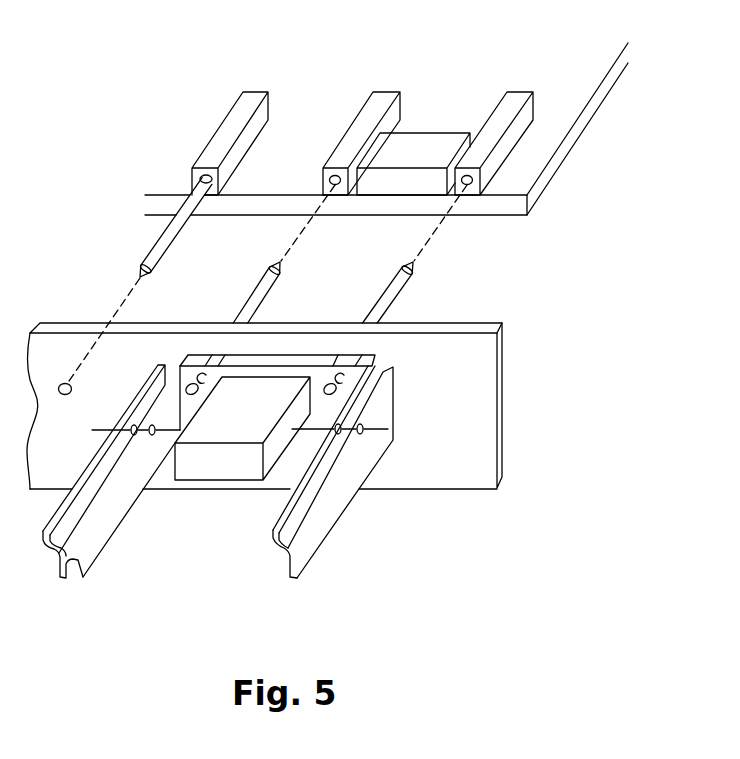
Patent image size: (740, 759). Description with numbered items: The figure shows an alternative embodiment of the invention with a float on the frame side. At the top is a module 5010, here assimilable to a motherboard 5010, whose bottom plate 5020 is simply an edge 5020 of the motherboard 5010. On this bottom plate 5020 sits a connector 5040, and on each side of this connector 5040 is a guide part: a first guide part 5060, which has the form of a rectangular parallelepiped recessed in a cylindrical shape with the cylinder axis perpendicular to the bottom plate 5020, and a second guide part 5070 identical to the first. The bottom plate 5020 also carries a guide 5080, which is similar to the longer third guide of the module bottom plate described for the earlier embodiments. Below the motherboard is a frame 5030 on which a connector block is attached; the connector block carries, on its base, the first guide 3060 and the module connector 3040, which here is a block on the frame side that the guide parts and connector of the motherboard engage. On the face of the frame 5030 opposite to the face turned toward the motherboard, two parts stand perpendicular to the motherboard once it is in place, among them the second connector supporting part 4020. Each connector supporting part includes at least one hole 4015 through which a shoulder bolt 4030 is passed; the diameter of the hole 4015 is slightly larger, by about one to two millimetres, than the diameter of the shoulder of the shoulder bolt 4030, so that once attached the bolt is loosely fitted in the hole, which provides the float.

The module / motherboard 5010 is at (553, 163).
The bottom plate 5020 is at (512, 210).
The frame 5030 is at (477, 413).
The connector 5040 is at (443, 148).
The first guide part 5060 is at (517, 98).
The second guide part 5070 is at (357, 131).
The guide 5080 is at (163, 237).
The module connector 3040 is at (210, 463).
The first guide 3060 is at (410, 266).
The hole 4015 is at (362, 436).
The second connector supporting part 4020 is at (312, 528).
The shoulder bolt 4030 is at (268, 518).